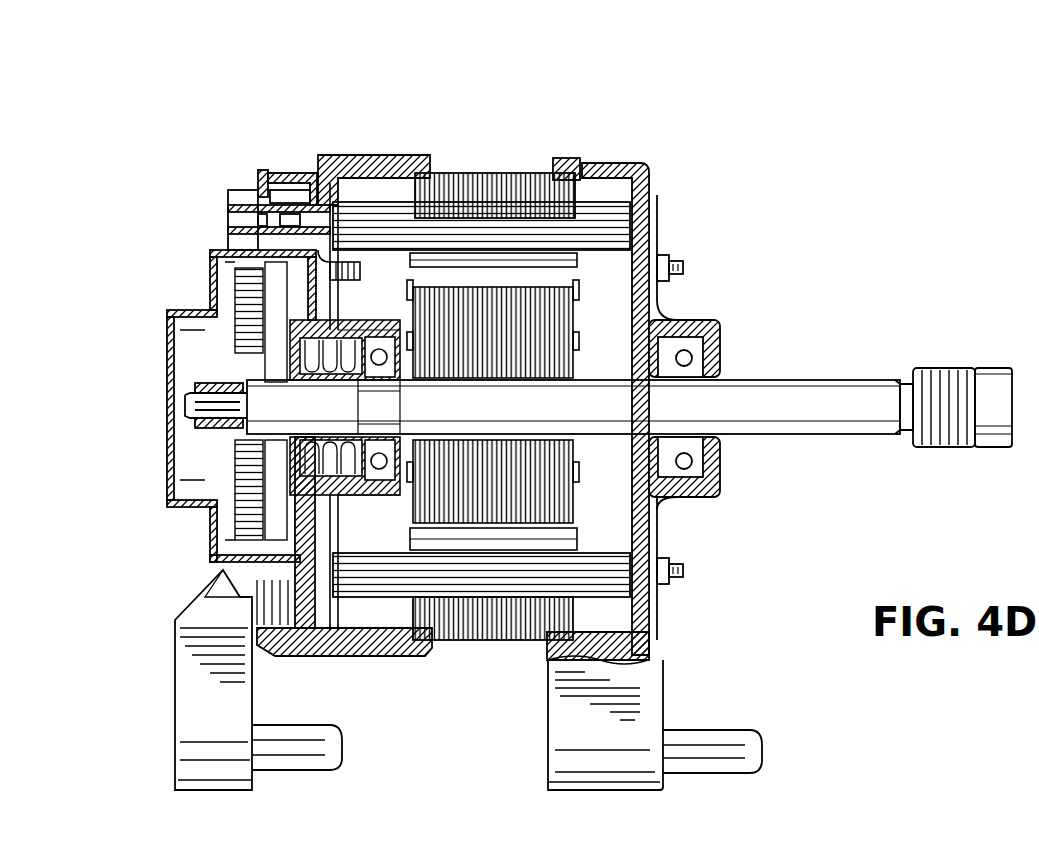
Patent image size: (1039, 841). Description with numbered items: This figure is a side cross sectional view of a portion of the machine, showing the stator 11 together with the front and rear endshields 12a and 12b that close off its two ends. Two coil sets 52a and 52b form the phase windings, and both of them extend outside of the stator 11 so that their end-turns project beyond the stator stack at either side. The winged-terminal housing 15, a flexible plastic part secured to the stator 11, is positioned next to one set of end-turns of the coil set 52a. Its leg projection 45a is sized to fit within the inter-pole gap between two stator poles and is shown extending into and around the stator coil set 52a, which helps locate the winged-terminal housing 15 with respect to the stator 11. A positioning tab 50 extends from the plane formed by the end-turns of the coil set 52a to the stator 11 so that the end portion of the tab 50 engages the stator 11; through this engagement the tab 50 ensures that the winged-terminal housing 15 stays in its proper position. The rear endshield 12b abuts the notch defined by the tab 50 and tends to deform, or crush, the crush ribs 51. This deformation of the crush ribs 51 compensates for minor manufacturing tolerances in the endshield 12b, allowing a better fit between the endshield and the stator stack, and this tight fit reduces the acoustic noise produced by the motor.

The stator 11 is at (483, 173).
The front endshield 12a is at (663, 196).
The rear endshield 12b is at (212, 252).
The winged-terminal housing 15 is at (243, 187).
The leg projection 45a is at (340, 274).
The positioning tab 50 is at (421, 157).
The crush ribs 51 is at (399, 183).
The coil set 52a is at (360, 223).
The coil set 52b is at (487, 622).